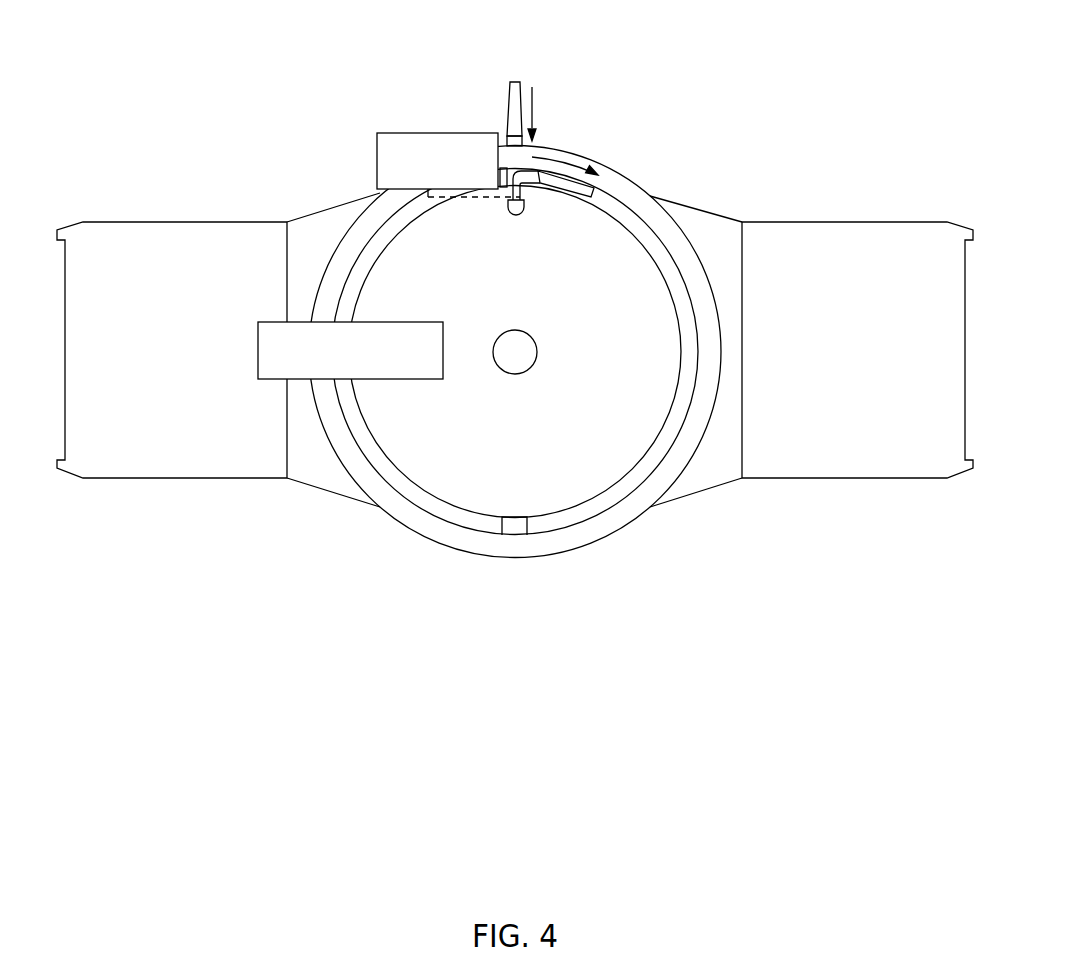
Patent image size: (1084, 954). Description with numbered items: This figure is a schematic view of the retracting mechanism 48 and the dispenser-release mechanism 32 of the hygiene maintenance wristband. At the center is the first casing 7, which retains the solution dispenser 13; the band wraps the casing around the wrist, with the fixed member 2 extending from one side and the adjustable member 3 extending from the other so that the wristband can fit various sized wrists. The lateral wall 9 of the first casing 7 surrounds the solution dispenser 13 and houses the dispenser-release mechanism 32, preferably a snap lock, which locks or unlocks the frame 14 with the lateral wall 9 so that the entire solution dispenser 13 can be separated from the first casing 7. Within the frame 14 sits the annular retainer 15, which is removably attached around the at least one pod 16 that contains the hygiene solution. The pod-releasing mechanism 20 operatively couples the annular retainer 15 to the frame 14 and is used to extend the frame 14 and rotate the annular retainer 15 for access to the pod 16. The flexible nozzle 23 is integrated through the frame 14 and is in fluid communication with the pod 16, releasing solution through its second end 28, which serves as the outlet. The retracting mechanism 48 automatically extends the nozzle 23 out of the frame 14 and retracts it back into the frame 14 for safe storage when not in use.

The fixed member 2 is at (852, 232).
The adjustable member 3 is at (226, 237).
The first casing 7 is at (316, 512).
The lateral wall 9 is at (345, 488).
The solution dispenser 13 is at (621, 164).
The frame 14 is at (370, 212).
The annular retainer 15 is at (635, 222).
The pod 16 is at (528, 450).
The pod-releasing mechanism 20 is at (536, 526).
The nozzle 23 is at (505, 120).
The second end 28 is at (503, 70).
The dispenser-release mechanism 32 is at (258, 356).
The retracting mechanism 48 is at (376, 158).